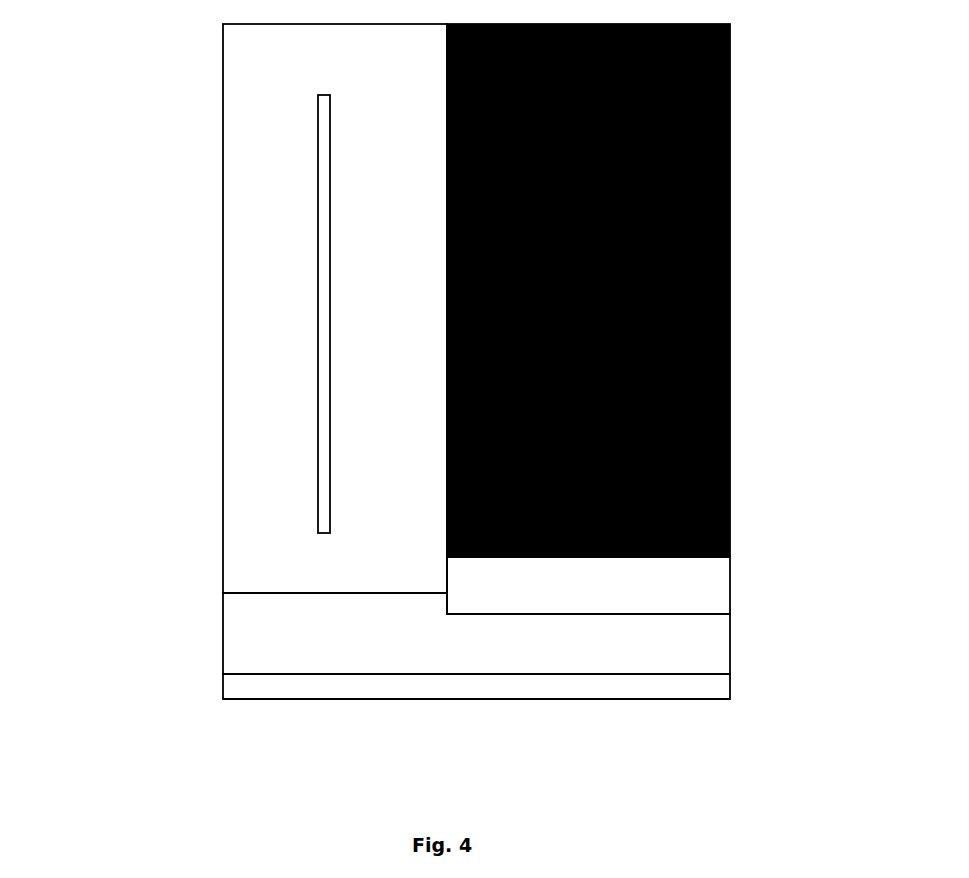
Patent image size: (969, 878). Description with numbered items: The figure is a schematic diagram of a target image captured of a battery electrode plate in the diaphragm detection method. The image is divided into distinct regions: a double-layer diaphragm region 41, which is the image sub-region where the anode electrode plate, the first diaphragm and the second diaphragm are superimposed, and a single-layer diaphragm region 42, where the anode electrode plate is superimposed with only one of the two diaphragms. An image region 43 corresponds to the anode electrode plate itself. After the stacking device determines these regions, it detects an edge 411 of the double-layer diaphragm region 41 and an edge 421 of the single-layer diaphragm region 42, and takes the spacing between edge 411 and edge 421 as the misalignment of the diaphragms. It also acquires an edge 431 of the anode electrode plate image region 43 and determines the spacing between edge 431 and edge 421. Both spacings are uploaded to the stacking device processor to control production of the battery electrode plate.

The double-layer diaphragm region 41 is at (715, 650).
The edge of the double-layer diaphragm region 411 is at (262, 674).
The single-layer diaphragm region 42 is at (697, 688).
The edge of the single-layer diaphragm region 421 is at (268, 700).
The image region corresponding to the anode electrode plate 43 is at (247, 202).
The edge of the anode electrode plate image region 431 is at (262, 593).